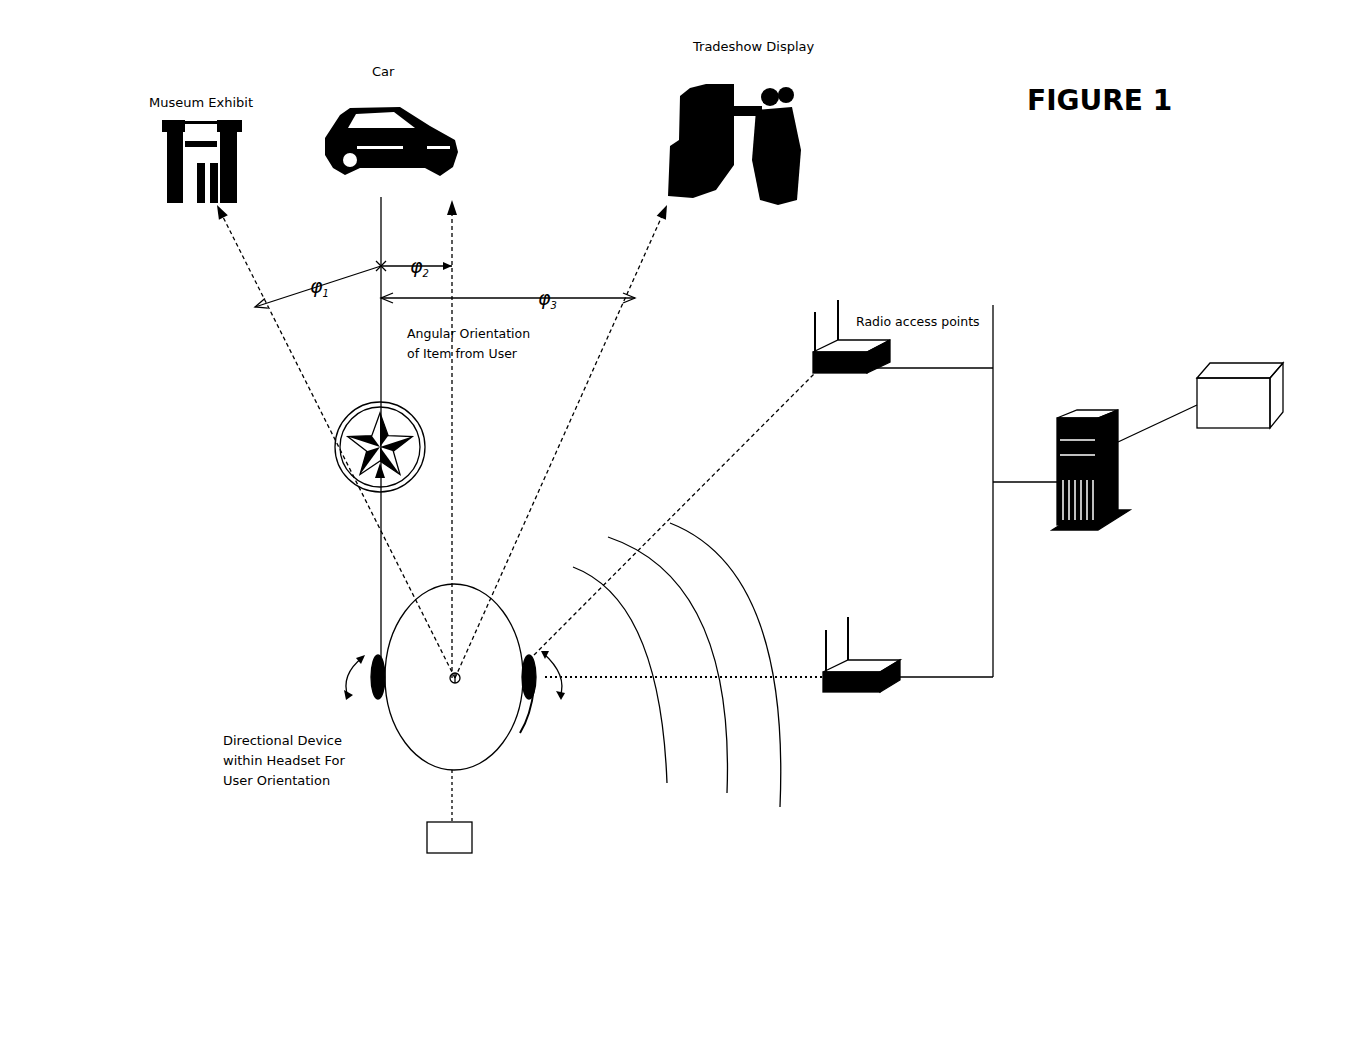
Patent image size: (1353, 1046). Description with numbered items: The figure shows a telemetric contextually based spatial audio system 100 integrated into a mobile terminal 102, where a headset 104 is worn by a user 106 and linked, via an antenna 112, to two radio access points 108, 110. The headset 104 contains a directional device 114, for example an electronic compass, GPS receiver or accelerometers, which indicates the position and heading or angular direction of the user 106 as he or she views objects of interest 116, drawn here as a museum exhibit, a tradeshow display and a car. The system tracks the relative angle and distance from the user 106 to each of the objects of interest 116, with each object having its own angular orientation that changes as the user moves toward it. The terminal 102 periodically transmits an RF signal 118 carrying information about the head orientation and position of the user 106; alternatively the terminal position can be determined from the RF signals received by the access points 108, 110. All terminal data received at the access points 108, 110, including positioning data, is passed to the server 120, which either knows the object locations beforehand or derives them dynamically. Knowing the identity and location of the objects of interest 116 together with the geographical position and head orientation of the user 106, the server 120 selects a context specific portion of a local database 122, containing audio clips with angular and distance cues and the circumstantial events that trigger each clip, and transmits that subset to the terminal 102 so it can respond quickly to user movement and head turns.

The telemetric contextually based spatial audio system 100 is at (1036, 273).
The mobile terminal 102 is at (472, 843).
The headset 104 is at (531, 653).
The user 106 is at (500, 748).
The radio access point 108 is at (851, 373).
The radio access point 110 is at (858, 692).
The antenna 112 is at (528, 718).
The directional device 114 is at (345, 423).
The objects of interest 116 is at (248, 158).
The RF signal 118 is at (710, 543).
The server 120 is at (1098, 418).
The local database 122 is at (1254, 354).